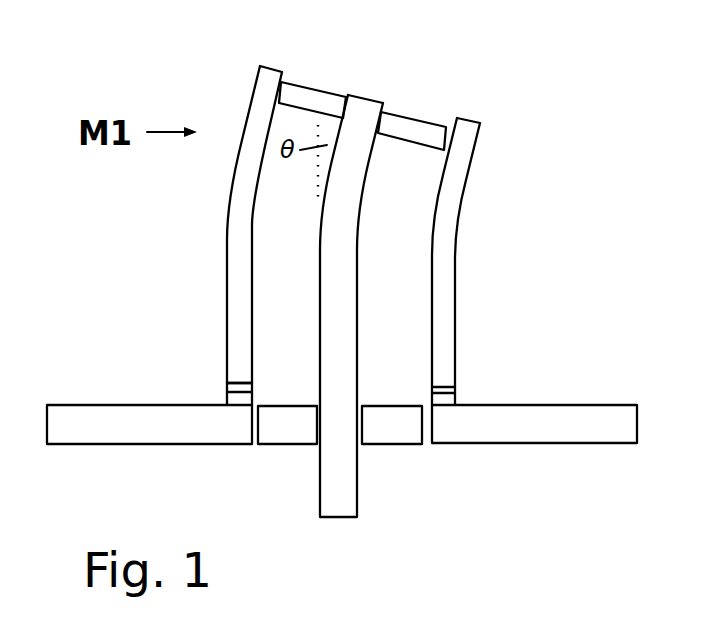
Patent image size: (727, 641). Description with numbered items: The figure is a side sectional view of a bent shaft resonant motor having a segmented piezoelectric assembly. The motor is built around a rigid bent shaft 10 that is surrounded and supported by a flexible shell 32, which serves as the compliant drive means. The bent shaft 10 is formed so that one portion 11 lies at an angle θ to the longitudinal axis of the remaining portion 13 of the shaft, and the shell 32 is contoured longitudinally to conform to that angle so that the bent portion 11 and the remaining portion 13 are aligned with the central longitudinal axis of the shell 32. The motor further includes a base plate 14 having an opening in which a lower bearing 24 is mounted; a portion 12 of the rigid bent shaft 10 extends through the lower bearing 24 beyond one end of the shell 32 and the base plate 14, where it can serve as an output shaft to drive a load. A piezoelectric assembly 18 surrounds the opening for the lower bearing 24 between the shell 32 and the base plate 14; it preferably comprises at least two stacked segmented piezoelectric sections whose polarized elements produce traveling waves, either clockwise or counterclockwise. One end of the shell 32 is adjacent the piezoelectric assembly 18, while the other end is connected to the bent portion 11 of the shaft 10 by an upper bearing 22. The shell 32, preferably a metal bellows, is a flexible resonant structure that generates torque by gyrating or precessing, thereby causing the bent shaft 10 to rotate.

The rigid bent shaft 10 is at (360, 115).
The bent portion of the shaft 11 is at (365, 158).
The output shaft portion 12 is at (340, 483).
The remaining portion of the shaft 13 is at (342, 295).
The base plate 14 is at (122, 423).
The piezoelectric assembly 18 is at (214, 382).
The upper bearing 22 is at (420, 123).
The lower bearing 24 is at (285, 430).
The flexible shell 32 is at (455, 177).